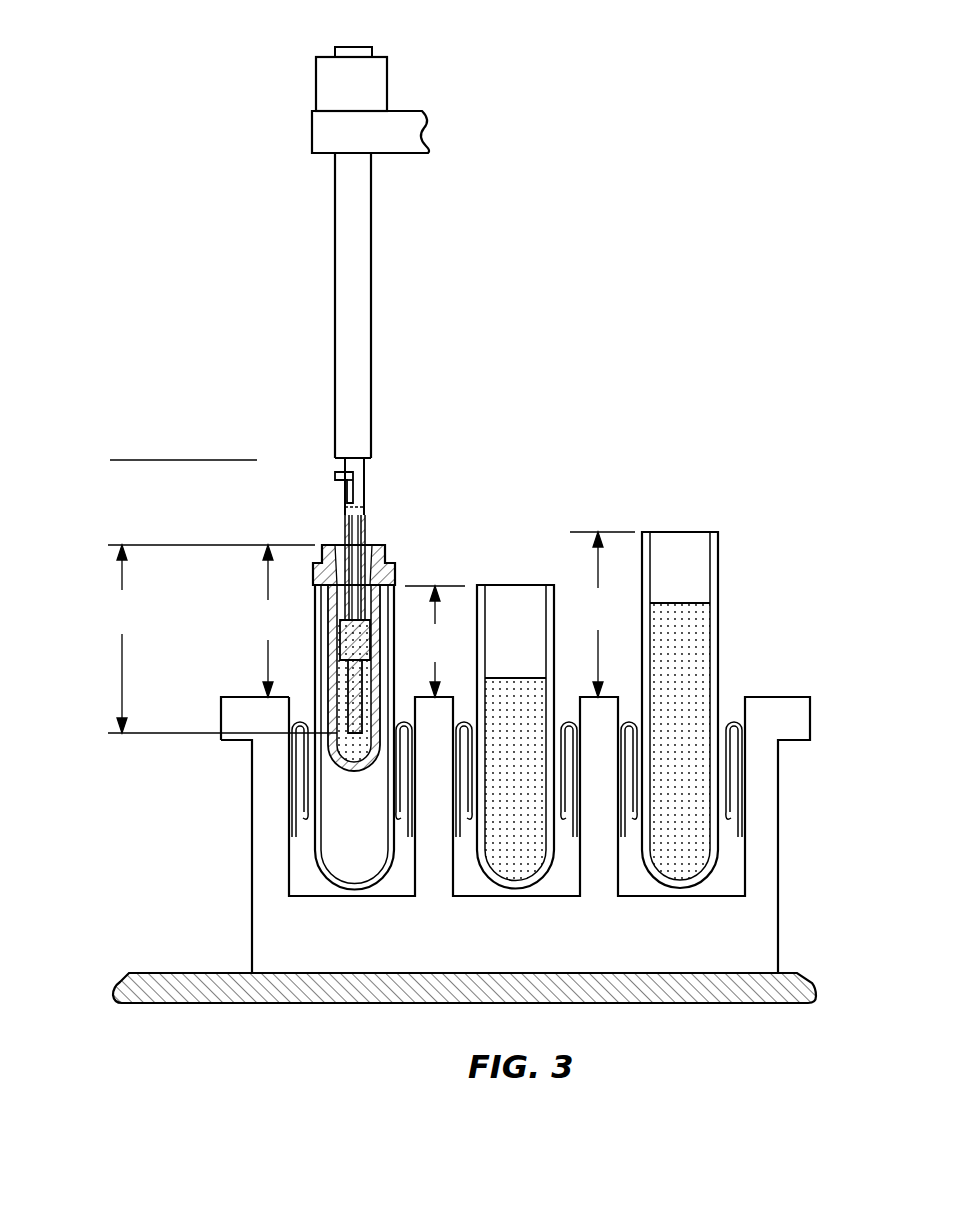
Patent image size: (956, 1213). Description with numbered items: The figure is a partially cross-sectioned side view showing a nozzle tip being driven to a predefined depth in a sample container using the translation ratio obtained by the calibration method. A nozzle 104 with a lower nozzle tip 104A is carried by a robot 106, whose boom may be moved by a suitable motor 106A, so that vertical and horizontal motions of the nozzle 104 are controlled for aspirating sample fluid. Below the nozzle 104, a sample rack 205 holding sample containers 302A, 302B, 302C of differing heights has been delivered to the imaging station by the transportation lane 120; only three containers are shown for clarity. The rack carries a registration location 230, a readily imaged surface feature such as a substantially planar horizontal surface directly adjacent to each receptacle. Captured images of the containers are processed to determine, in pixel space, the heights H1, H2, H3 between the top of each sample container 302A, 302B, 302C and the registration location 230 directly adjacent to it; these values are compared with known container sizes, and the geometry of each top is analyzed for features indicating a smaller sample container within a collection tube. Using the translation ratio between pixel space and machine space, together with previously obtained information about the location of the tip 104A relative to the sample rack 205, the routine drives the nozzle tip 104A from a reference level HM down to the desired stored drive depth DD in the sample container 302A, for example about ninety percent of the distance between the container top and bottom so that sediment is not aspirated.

The robot 106 is at (421, 108).
The motor 106A is at (328, 56).
The nozzle 104 is at (365, 507).
The nozzle tip 104A is at (341, 753).
The sample container 302A is at (323, 545).
The sample container 302B is at (553, 584).
The sample container 302C is at (718, 531).
The registration location 230 is at (228, 697).
The sample rack 205 is at (252, 897).
The transportation lane 120 is at (790, 1004).
The home / measurement height line HM is at (168, 460).
The drive depth DD is at (222, 639).
The height H1 is at (271, 621).
The height H2 is at (435, 641).
The height H3 is at (602, 614).